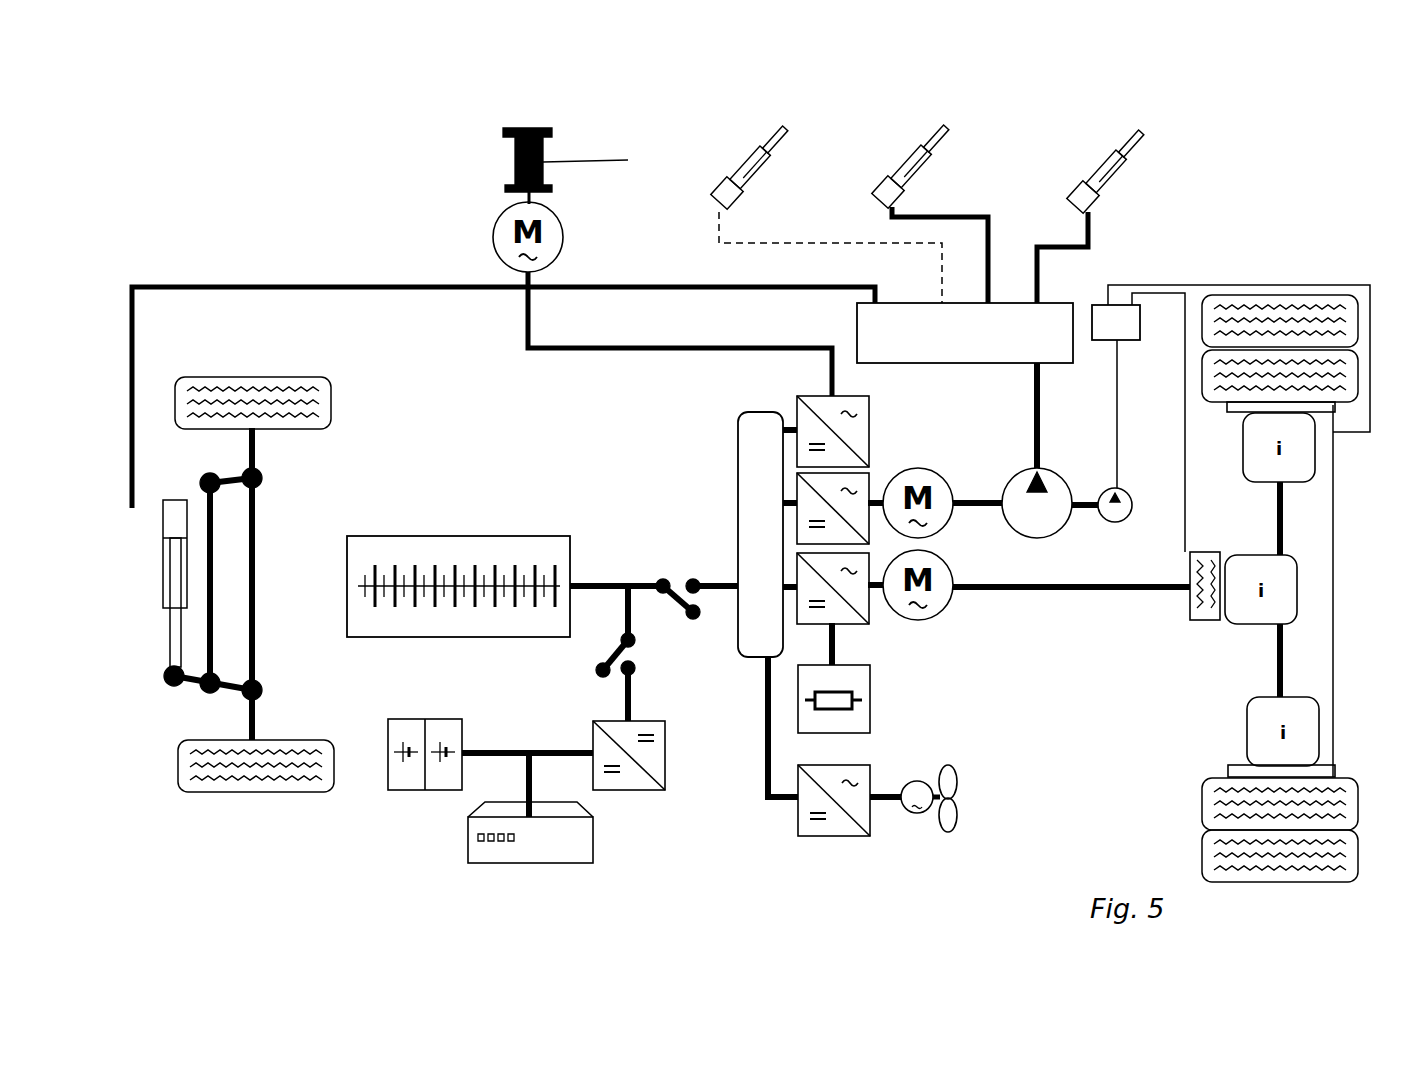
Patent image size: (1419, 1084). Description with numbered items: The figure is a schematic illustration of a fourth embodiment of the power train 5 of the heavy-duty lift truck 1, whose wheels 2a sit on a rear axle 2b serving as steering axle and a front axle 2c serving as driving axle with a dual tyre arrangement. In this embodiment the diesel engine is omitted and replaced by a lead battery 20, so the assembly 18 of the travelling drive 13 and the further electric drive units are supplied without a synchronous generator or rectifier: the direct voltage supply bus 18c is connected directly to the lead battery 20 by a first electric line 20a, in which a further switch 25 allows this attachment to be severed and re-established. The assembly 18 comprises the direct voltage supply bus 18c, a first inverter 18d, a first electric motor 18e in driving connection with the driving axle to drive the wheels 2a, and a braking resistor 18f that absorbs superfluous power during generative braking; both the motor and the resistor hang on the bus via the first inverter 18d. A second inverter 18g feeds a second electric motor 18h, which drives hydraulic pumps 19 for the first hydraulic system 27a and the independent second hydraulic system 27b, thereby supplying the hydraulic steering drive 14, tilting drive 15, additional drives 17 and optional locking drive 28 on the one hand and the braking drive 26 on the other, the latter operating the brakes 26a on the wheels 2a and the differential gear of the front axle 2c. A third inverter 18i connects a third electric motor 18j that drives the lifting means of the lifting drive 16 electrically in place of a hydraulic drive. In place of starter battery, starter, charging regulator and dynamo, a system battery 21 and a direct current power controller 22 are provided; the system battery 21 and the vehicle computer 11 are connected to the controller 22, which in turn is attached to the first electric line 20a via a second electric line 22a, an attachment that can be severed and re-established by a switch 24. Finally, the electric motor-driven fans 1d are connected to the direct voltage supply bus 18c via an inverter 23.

The heavy-duty lift truck 1 is at (191, 206).
The electric motor-driven fans 1d is at (956, 836).
The wheels 2a is at (1341, 292).
The rear axle 2b is at (243, 805).
The front axle 2c is at (1286, 290).
The power train 5 is at (609, 449).
The vehicle computer 11 is at (531, 868).
The travelling drive 13 is at (1071, 608).
The steering drive 14 is at (166, 589).
The tilting drive 15 is at (899, 166).
The lifting drive 16 is at (508, 158).
The additional drives 17 is at (1096, 166).
The assembly 18 is at (926, 690).
The direct voltage supply bus 18c is at (736, 441).
The first inverter 18d is at (878, 628).
The first electric motor 18e is at (951, 616).
The braking resistor 18f is at (876, 712).
The second inverter 18g is at (871, 486).
The second electric motor 18h is at (931, 467).
The third inverter 18i is at (797, 422).
The third electric motor 18j is at (494, 227).
The hydraulic pump 19 is at (1011, 479).
The lead battery 20 is at (456, 533).
The first electric line 20a is at (613, 579).
The system battery 21 is at (429, 795).
The direct current power controller 22 is at (630, 795).
The second electric line 22a is at (640, 695).
The inverter 23 is at (840, 841).
The switch 24 is at (592, 678).
The further switch 25 is at (681, 578).
The braking drive 26 is at (1156, 268).
The brakes 26a is at (1336, 410).
The first hydraulic system 27a is at (855, 333).
The second hydraulic system 27b is at (1136, 345).
The locking drive 28 is at (738, 166).